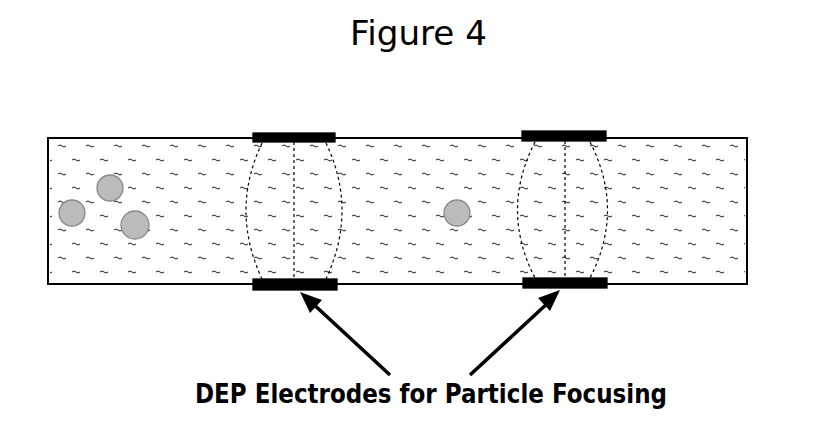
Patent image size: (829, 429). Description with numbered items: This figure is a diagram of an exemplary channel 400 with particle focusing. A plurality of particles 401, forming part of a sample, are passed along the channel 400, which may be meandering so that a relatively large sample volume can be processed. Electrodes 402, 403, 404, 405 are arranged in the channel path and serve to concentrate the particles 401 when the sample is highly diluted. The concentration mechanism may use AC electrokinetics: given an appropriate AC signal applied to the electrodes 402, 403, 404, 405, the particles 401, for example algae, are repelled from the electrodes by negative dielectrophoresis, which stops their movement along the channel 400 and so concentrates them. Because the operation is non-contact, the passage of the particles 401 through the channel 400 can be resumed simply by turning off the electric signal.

The channel 400 is at (73, 138).
The particles 401 is at (134, 199).
The electrode 402 is at (283, 112).
The electrode 403 is at (252, 301).
The electrode 404 is at (562, 110).
The electrode 405 is at (598, 298).